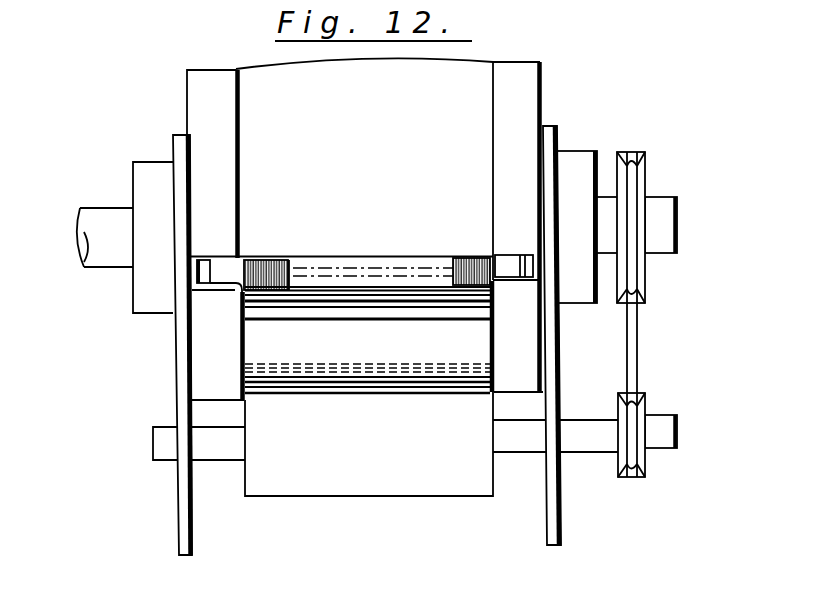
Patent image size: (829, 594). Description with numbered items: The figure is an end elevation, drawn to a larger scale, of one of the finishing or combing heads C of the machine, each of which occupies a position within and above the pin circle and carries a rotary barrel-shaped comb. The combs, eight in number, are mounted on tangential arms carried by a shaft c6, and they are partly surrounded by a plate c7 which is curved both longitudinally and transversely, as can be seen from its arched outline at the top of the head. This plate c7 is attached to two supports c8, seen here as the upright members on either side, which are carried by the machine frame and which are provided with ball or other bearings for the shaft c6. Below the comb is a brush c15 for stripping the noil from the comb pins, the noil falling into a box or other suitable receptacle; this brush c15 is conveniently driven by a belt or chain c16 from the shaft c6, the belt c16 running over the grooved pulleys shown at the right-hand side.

The combing or finishing head C is at (198, 108).
The shaft c6 is at (100, 242).
The plate c7 is at (368, 274).
The supports c8 is at (570, 372).
The brush c15 is at (369, 438).
The belt or chain c16 is at (633, 330).